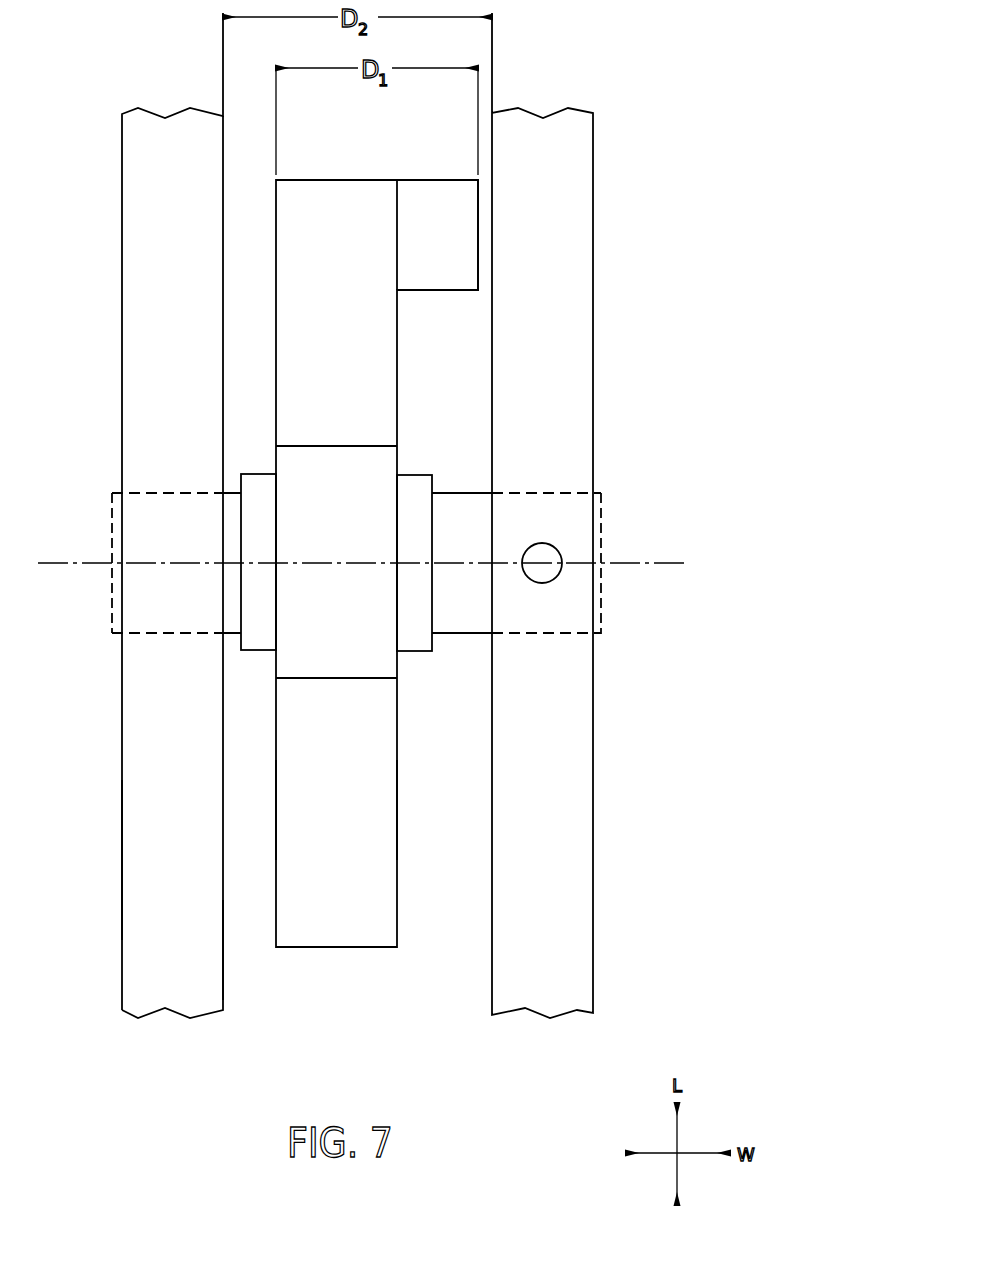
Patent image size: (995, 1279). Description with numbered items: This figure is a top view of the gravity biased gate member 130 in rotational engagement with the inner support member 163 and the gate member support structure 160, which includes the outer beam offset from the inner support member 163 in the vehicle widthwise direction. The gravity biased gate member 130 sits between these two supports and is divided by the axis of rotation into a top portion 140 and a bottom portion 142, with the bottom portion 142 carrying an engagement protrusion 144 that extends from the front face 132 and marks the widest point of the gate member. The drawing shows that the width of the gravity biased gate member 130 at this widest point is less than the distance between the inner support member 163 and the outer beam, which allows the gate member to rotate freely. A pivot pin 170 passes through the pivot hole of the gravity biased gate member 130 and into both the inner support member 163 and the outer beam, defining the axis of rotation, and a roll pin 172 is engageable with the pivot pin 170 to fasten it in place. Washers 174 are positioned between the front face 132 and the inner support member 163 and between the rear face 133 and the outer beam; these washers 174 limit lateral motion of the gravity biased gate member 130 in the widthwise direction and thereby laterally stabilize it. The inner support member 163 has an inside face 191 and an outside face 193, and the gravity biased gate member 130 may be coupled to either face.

The gravity biased gate member 130 is at (354, 597).
The front face 132 is at (397, 818).
The rear face 133 is at (273, 798).
The top portion 140 is at (391, 462).
The bottom portion 142 is at (331, 200).
The engagement protrusion 144 is at (439, 200).
The gate member support structure 160 is at (582, 943).
The inner support member 163 is at (137, 250).
The pivot pin 170 is at (155, 601).
The roll pin 172 is at (562, 557).
The washers 174 is at (258, 648).
The inside face 191 is at (122, 858).
The outside face 193 is at (222, 958).